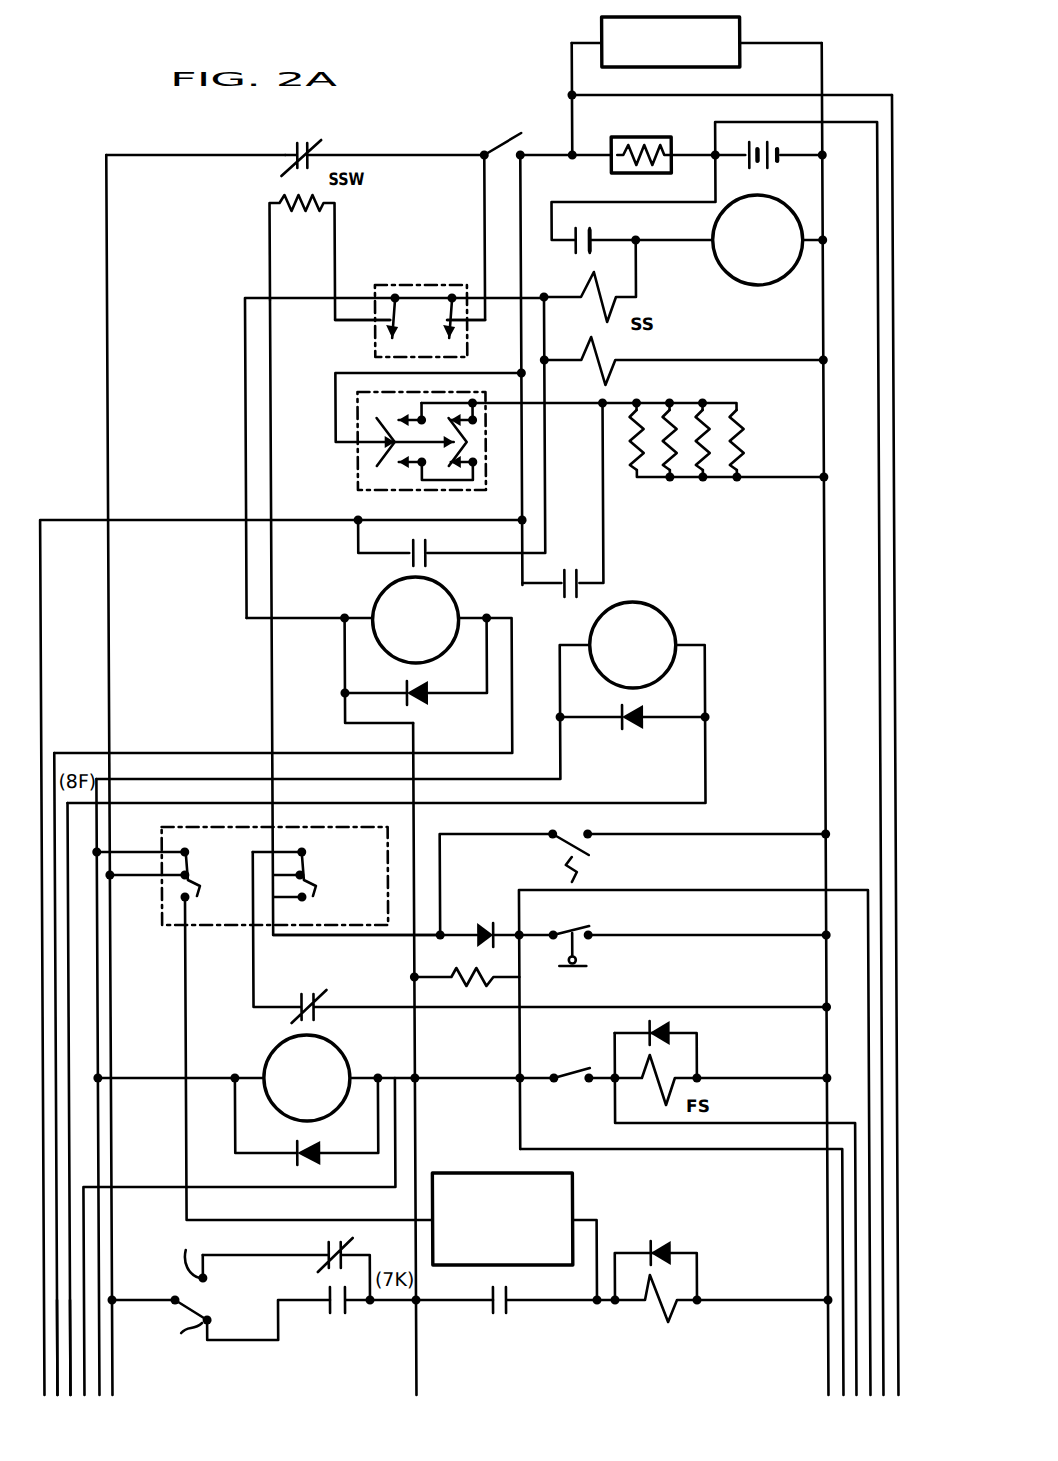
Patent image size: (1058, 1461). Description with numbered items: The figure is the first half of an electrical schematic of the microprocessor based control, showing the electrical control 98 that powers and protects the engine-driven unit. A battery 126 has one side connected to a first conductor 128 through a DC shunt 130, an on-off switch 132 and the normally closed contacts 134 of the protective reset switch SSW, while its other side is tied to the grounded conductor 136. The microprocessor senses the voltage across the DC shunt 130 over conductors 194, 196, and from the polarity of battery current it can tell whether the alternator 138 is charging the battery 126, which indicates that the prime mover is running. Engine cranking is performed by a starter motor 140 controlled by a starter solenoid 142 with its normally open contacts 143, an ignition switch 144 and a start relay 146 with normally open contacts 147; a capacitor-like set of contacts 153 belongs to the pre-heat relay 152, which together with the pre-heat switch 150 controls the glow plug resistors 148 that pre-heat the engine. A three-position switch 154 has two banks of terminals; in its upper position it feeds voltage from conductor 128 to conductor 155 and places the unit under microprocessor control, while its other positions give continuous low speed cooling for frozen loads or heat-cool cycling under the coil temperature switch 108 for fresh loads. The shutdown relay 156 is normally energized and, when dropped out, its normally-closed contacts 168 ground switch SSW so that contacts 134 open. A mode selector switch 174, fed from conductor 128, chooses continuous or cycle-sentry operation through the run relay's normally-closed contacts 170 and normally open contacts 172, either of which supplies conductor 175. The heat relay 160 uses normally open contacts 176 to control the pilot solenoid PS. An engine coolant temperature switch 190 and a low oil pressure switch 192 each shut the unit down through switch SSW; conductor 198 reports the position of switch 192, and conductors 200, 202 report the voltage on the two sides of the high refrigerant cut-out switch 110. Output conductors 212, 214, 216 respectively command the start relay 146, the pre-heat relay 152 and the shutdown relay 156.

The control 98 is at (394, 133).
The coil temperature switch 108 is at (572, 1194).
The high refrigerant cut-out switch 110 is at (570, 1083).
The battery 126 is at (770, 170).
The first conductor 128 is at (106, 174).
The DC shunt 130 is at (653, 137).
The on-off switch 132 is at (511, 137).
The normally closed contacts 134 is at (298, 142).
The conductor 136 is at (826, 205).
The alternator 138 is at (743, 22).
The starter motor 140 is at (765, 286).
The starter solenoid 142 is at (587, 347).
The normally open contacts 143 is at (603, 236).
The ignition switch 144 is at (418, 284).
The start relay 146 is at (500, 608).
The normally open contacts 147 is at (408, 562).
The glow plug resistors 148 is at (742, 421).
The pre-heat switch 150 is at (359, 474).
The pre-heat relay 152 is at (712, 634).
The normally open contacts 153 is at (573, 571).
The three-position switch 154 is at (220, 928).
The conductor 155 is at (94, 1048).
The shutdown relay 156 is at (396, 1064).
The heat relay 160 is at (562, 1346).
The normally-closed contacts 168 is at (305, 992).
The normally-closed contacts 170 is at (330, 1245).
The normally open contacts 172 is at (338, 1305).
The mode selector switch 174 is at (158, 1284).
The conductor 175 is at (414, 1100).
The normally open contacts 176 is at (492, 1306).
The engine coolant temperature switch 190 is at (560, 846).
The low oil pressure switch 192 is at (582, 945).
The conductor 194 is at (833, 95).
The conductor 196 is at (849, 122).
The conductor 198 is at (745, 890).
The conductor 200 is at (482, 985).
The conductor 202 is at (754, 1150).
The output conductor 212 is at (58, 1382).
The output conductor 214 is at (70, 1362).
The output conductor 216 is at (123, 1185).